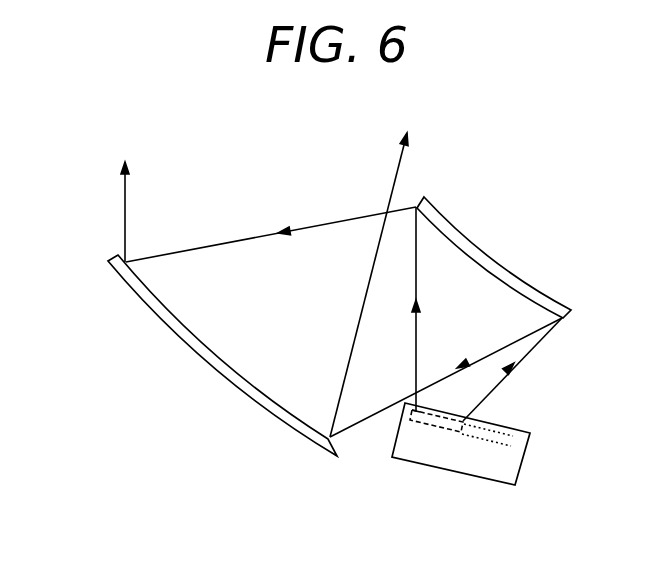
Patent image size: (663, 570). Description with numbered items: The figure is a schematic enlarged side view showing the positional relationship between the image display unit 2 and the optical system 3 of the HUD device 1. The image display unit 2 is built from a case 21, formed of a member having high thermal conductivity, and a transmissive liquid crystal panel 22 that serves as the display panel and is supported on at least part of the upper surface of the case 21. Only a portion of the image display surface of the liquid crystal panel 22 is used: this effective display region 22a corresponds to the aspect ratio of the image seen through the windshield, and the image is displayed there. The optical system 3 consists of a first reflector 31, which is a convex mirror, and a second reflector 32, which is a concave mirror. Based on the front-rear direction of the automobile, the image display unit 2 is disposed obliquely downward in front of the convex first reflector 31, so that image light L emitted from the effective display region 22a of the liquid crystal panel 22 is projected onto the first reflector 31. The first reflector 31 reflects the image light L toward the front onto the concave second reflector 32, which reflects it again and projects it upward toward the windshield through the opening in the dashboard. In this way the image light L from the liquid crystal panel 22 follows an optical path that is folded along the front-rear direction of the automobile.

The HUD device 1 is at (93, 225).
The image display unit 2 is at (542, 457).
The case 21 is at (492, 470).
The liquid crystal panel 22 is at (523, 427).
The effective display region 22a is at (430, 428).
The optical system 3 is at (448, 197).
The first reflector 31 is at (502, 273).
The second reflector 32 is at (185, 350).
The image light L is at (230, 240).